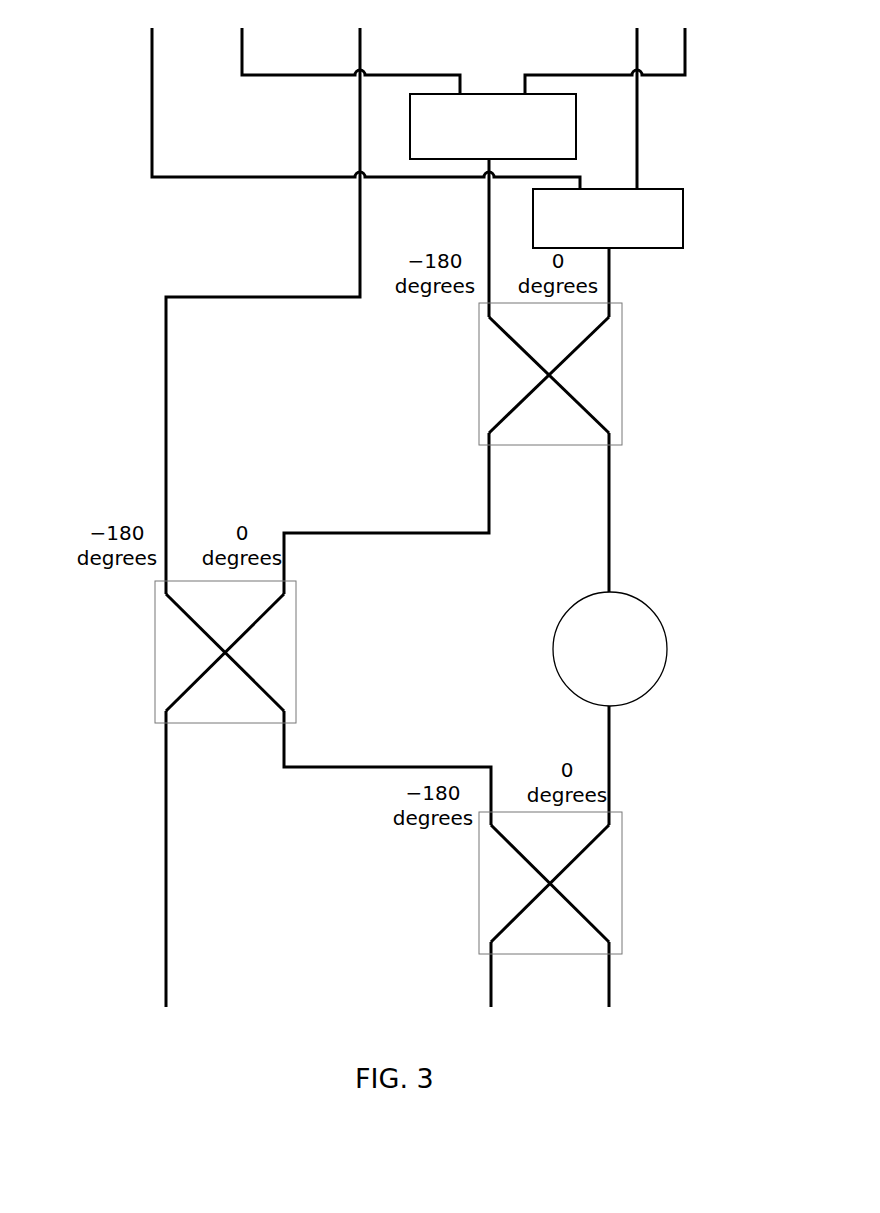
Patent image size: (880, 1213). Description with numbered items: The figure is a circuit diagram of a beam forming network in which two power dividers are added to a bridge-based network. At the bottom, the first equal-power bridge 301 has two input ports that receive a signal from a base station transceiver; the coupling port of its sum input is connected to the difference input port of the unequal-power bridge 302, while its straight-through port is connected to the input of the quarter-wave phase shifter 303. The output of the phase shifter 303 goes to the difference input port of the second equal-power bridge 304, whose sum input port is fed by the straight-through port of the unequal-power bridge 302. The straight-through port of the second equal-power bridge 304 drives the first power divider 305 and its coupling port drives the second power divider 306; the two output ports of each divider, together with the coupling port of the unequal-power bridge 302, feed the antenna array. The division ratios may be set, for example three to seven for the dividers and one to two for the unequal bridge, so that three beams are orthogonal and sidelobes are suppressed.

The first 180-degree bridge for equal-power division 301 is at (622, 878).
The 180-degree bridge for unequal-power division 302 is at (155, 660).
The 90-degree phase shifter 303 is at (667, 648).
The second 180-degree bridge for equal-power division 304 is at (622, 377).
The first power divider 305 is at (683, 217).
The second power divider 306 is at (576, 128).